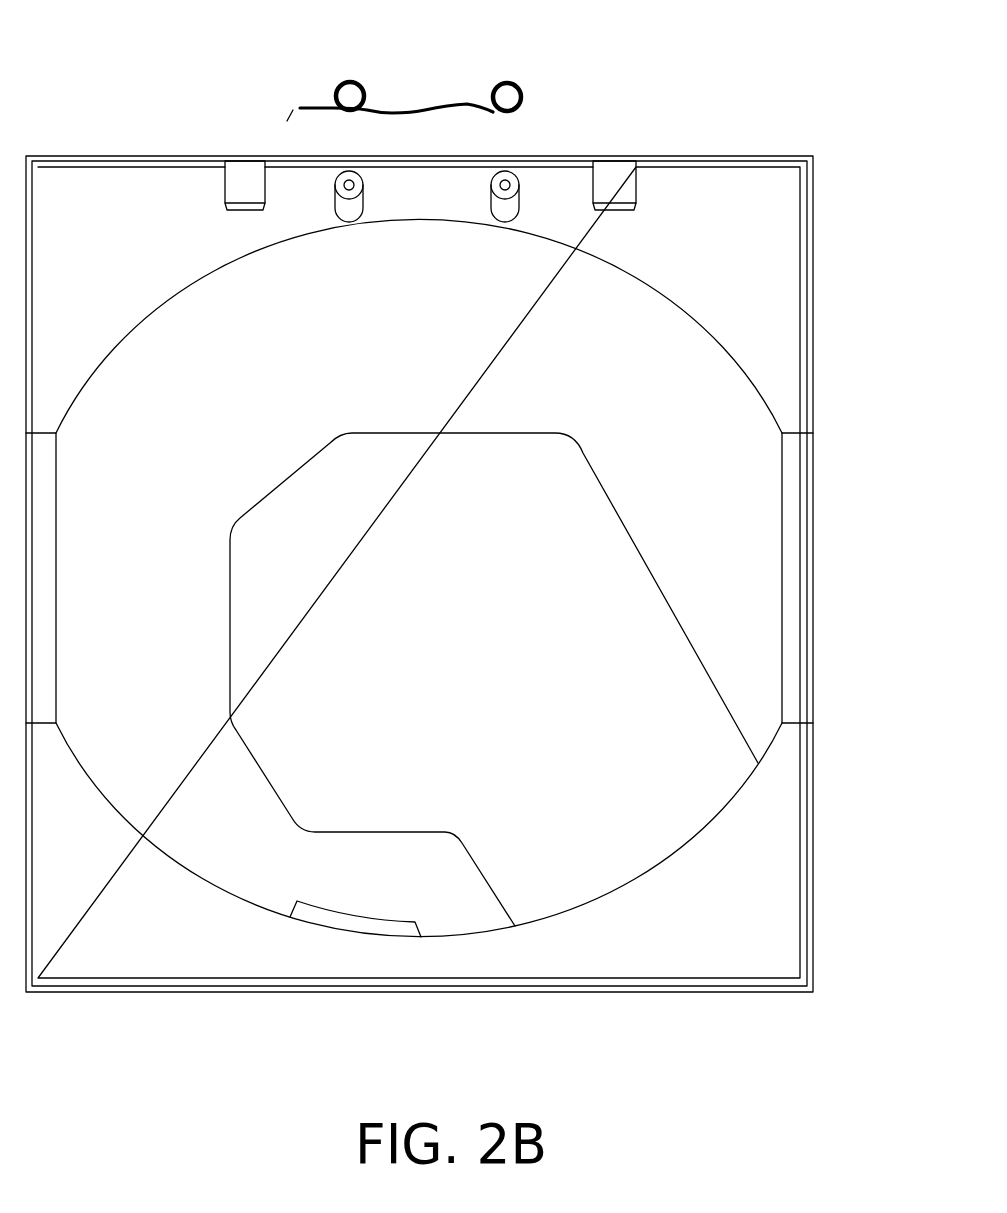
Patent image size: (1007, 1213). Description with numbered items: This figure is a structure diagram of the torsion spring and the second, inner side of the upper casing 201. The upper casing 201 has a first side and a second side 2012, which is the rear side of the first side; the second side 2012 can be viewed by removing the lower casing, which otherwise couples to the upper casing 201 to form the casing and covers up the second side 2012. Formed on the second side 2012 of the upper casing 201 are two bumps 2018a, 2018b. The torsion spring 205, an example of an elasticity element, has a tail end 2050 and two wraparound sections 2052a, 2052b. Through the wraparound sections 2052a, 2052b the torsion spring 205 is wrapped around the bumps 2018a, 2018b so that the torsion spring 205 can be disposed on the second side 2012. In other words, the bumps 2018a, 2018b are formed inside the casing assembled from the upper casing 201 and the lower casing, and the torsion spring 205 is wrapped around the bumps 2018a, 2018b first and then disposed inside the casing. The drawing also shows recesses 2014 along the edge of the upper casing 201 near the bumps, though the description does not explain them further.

The upper casing 201 is at (767, 160).
The second side 2012 is at (783, 268).
The notch 2014 is at (250, 166).
The bump 2018a is at (360, 177).
The bump 2018b is at (516, 177).
The torsion spring 205 is at (415, 61).
The tail end 2050 is at (293, 110).
The wraparound section 2052a is at (348, 82).
The wraparound section 2052b is at (521, 92).